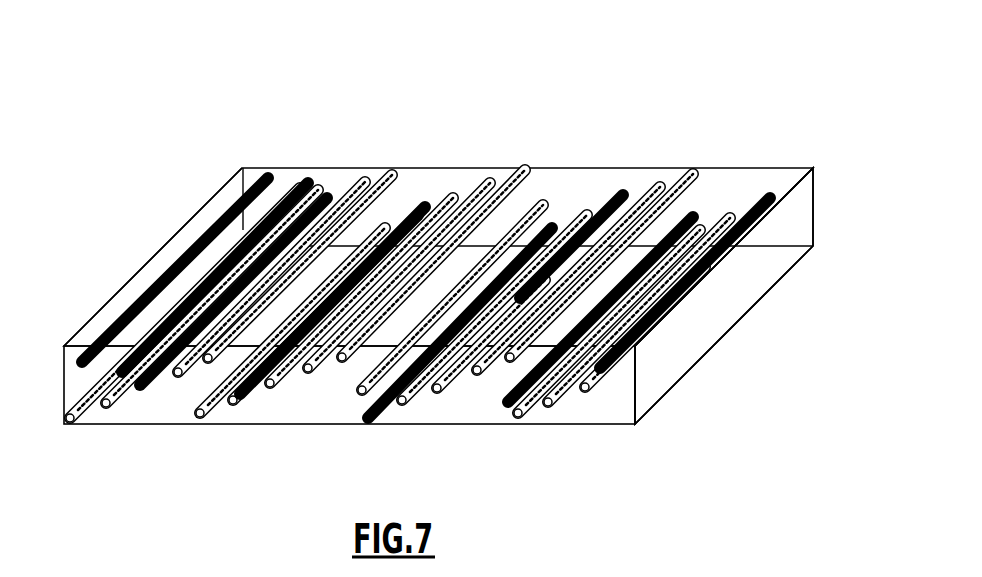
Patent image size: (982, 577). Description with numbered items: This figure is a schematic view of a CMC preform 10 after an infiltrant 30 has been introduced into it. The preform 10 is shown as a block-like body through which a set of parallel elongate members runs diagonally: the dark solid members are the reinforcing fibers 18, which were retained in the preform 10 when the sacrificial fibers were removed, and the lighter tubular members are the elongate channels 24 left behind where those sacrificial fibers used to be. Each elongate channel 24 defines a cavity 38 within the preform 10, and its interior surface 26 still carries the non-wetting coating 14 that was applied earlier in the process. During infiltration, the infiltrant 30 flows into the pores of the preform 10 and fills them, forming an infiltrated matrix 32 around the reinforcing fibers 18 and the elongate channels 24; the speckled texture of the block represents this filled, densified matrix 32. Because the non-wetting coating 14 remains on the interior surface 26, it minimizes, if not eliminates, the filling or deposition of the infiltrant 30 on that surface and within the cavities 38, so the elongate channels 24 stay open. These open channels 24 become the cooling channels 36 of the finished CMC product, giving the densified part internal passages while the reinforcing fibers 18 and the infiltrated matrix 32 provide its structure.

The CMC preform 10 is at (215, 114).
The non-wetting coating 14 is at (271, 388).
The reinforcing fibers 18 is at (140, 390).
The elongate channels 24 is at (403, 405).
The interior surface 26 is at (495, 370).
The infiltrant 30 is at (163, 263).
The infiltrated matrix 32 is at (777, 172).
The cooling channels 36 is at (521, 416).
The cavity 38 is at (340, 363).